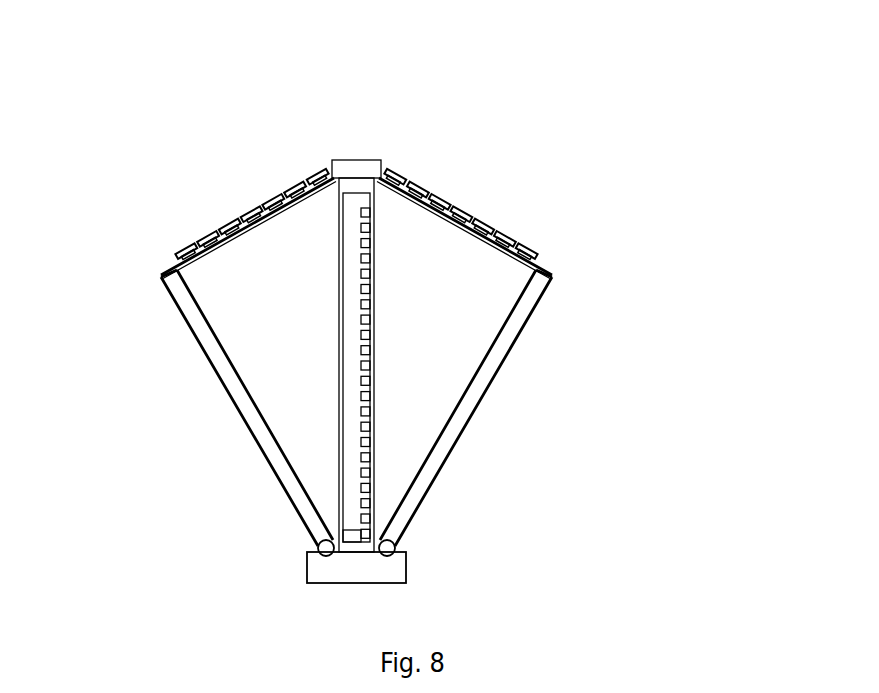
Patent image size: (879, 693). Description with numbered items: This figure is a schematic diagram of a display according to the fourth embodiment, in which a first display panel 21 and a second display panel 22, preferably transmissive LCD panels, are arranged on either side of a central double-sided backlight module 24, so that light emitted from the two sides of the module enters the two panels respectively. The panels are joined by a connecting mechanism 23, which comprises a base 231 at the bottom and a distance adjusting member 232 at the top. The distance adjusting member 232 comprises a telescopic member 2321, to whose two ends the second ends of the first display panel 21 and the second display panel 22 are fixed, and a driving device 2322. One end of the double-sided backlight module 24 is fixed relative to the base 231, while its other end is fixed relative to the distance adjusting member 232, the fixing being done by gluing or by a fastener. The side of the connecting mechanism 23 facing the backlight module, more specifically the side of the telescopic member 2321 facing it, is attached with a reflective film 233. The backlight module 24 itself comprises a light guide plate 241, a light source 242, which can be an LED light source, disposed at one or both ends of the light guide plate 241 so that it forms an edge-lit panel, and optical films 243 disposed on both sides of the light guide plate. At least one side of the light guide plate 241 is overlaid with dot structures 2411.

The first display panel 21 is at (227, 382).
The second display panel 22 is at (458, 428).
The connecting mechanism 23 is at (407, 556).
The base 231 is at (342, 572).
The distance adjusting member 232 is at (712, 82).
The telescopic member 2321 is at (418, 205).
The driving device 2322 is at (358, 165).
The reflective film 233 is at (472, 232).
The double-sided backlight module 24 is at (100, 18).
The light guide plate 241 is at (352, 300).
The dot structures 2411 is at (363, 210).
The light source 242 is at (346, 535).
The optical films 243 is at (341, 220).